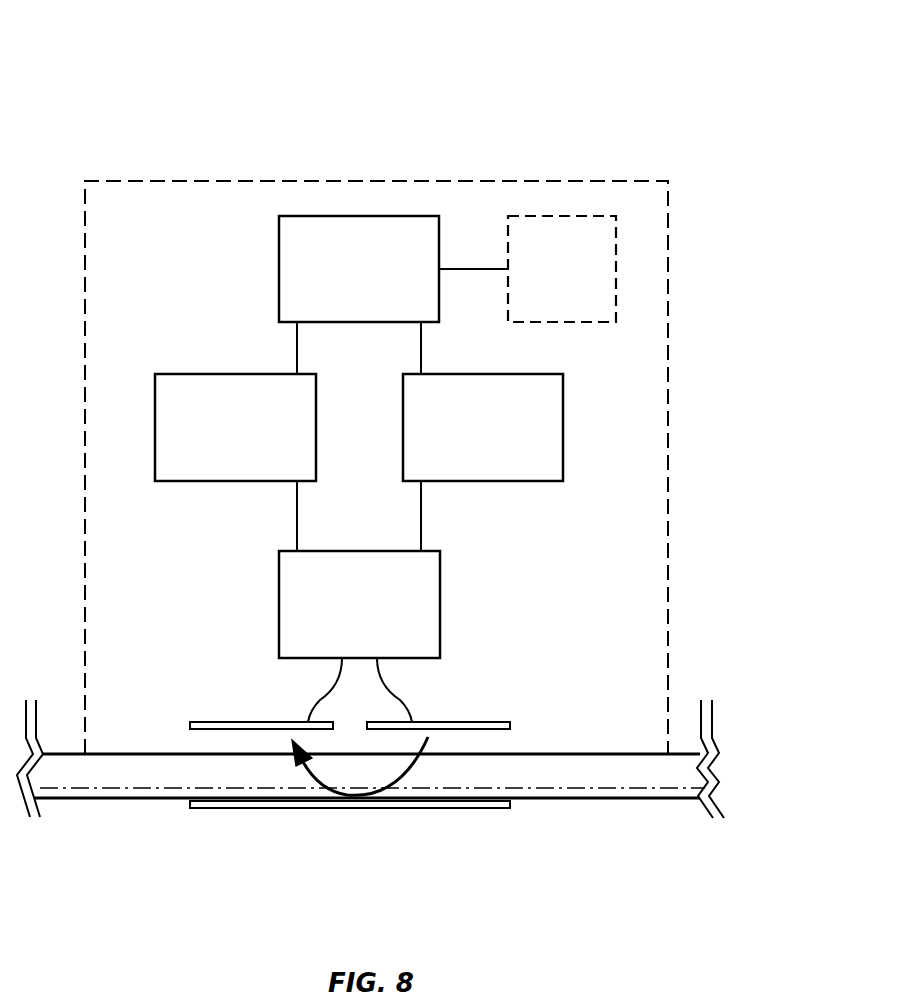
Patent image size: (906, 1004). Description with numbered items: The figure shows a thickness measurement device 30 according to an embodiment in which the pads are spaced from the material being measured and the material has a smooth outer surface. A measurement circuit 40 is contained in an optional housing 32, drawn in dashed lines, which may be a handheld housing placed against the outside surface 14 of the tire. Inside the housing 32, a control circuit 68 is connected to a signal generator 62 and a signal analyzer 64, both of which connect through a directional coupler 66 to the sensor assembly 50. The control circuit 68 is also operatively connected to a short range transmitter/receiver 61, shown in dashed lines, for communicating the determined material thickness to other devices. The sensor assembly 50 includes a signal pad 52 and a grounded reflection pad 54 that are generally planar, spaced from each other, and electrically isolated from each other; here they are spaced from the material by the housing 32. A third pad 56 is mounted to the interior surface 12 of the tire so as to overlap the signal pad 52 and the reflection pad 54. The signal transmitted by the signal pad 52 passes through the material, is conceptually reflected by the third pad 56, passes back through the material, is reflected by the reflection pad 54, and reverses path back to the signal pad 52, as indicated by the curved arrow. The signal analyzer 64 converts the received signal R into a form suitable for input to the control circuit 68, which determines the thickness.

The measurement device 30 is at (160, 93).
The housing 32 is at (85, 228).
The measurement circuit 40 is at (215, 343).
The control circuit 68 is at (393, 295).
The transmitter/receiver 61 is at (562, 269).
The signal generator 62 is at (235, 462).
The signal analyzer 64 is at (483, 462).
The directional coupler 66 is at (359, 636).
The sensor assembly 50 is at (457, 701).
The signal pad 52 is at (213, 722).
The reflection pad 54 is at (470, 722).
The third pad 56 is at (393, 808).
The interior surface 12 is at (550, 798).
The outside surface 14 is at (152, 755).
The received signal R is at (310, 776).